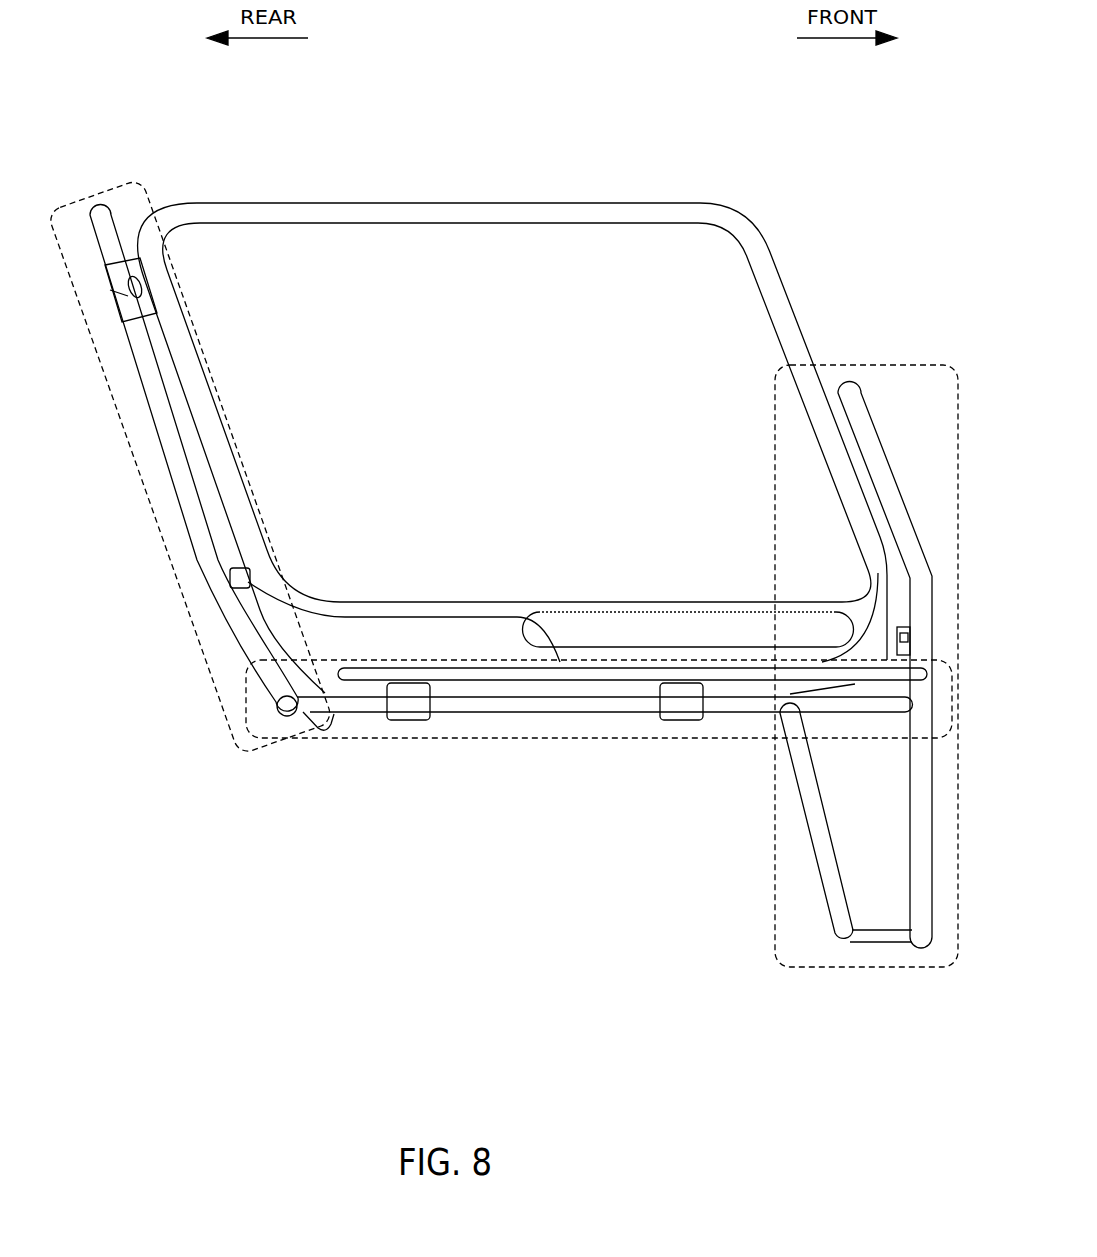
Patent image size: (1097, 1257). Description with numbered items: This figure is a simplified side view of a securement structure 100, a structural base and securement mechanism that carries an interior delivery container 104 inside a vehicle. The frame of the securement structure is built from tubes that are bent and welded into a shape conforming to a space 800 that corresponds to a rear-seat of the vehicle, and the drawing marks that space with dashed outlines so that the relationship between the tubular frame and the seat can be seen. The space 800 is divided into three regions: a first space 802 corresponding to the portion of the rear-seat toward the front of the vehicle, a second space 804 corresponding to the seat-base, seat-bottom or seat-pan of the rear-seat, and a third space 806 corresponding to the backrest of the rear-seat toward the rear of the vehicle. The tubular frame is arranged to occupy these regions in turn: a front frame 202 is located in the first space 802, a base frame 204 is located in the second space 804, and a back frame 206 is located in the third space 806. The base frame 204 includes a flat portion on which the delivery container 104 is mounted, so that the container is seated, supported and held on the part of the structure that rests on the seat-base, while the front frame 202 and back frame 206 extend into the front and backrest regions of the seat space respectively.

The securement structure 100 is at (134, 75).
The delivery container 104 is at (398, 203).
The front frame 202 is at (867, 393).
The base frame 204 is at (447, 700).
The back frame 206 is at (110, 212).
The space 800 is at (318, 768).
The first space 802 is at (780, 893).
The second space 804 is at (533, 740).
The third space 806 is at (188, 612).